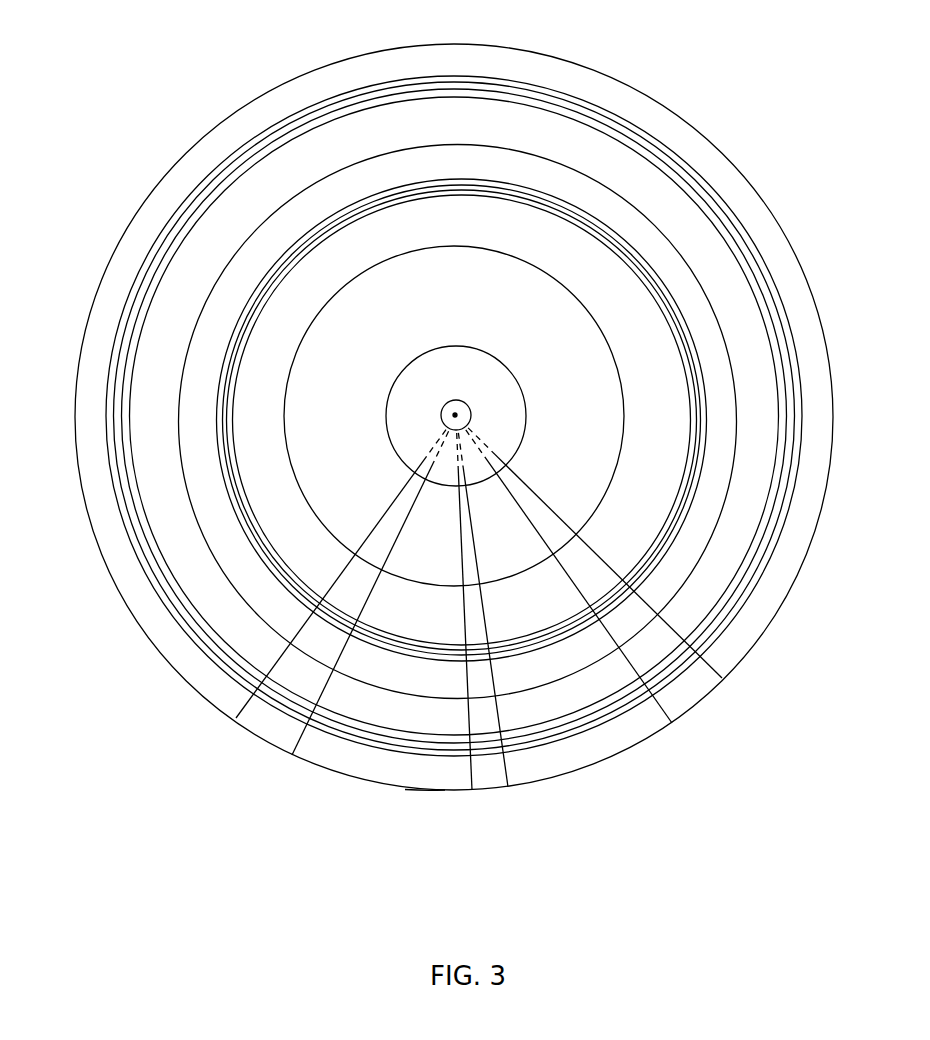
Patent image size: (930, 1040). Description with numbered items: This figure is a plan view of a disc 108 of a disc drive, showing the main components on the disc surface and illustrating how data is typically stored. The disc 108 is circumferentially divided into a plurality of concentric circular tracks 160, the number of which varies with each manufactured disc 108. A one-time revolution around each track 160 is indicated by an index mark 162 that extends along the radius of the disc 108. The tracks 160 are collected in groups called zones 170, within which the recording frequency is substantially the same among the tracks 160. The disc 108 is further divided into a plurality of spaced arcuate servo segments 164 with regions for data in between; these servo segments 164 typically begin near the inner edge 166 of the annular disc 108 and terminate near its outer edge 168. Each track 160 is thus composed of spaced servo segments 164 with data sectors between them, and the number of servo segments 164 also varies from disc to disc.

The disc 108 is at (208, 133).
The concentric circular tracks 160 is at (231, 496).
The index mark 162 is at (245, 717).
The servo segments 164 is at (323, 650).
The inner edge 166 is at (490, 353).
The outer edge 168 is at (425, 793).
The zones 170 is at (662, 472).